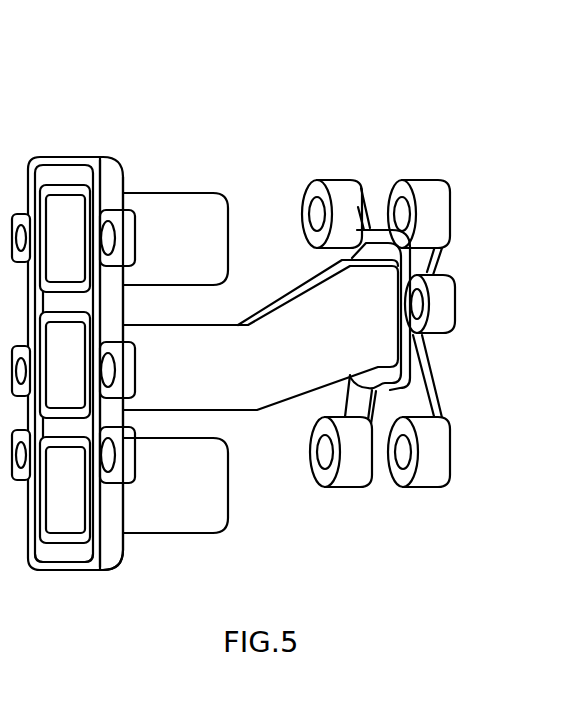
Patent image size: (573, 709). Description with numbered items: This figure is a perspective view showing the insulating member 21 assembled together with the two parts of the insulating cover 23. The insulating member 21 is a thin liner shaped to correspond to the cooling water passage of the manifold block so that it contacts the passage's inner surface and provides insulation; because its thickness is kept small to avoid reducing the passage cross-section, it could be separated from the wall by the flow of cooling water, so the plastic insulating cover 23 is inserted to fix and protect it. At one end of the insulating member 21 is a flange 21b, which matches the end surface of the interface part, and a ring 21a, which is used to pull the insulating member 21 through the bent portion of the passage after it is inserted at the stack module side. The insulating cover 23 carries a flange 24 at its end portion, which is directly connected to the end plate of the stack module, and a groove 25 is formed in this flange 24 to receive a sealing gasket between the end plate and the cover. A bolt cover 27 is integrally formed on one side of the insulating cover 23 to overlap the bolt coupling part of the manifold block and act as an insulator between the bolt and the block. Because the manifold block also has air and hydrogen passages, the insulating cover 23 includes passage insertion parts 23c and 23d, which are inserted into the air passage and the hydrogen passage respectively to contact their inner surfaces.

The insulating member 21 is at (71, 150).
The ring 21a is at (380, 397).
The flange 21b is at (400, 382).
The insulating cover 23 is at (425, 173).
The passage insertion part 23c is at (188, 230).
The passage insertion part 23d is at (203, 503).
The flange 24 is at (112, 547).
The groove 25 is at (78, 552).
The bolt cover 27 is at (108, 217).